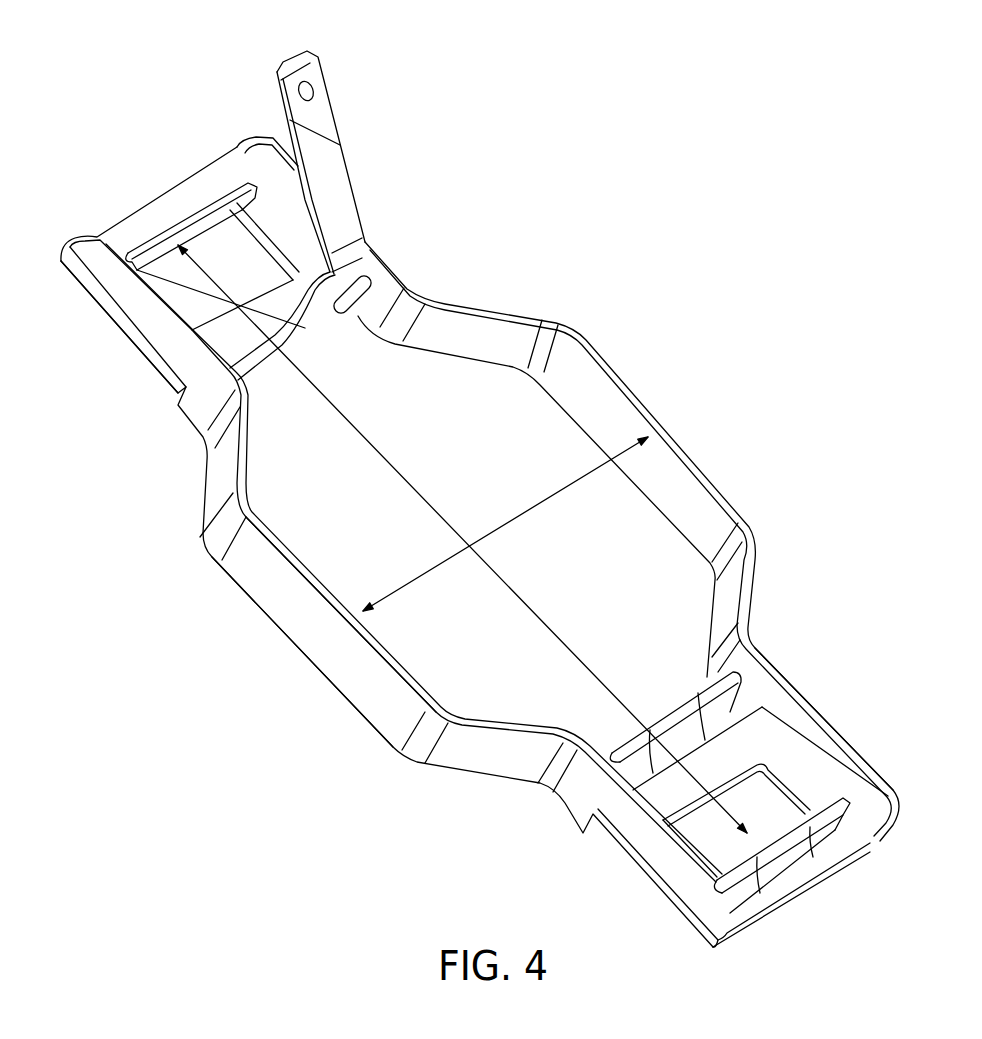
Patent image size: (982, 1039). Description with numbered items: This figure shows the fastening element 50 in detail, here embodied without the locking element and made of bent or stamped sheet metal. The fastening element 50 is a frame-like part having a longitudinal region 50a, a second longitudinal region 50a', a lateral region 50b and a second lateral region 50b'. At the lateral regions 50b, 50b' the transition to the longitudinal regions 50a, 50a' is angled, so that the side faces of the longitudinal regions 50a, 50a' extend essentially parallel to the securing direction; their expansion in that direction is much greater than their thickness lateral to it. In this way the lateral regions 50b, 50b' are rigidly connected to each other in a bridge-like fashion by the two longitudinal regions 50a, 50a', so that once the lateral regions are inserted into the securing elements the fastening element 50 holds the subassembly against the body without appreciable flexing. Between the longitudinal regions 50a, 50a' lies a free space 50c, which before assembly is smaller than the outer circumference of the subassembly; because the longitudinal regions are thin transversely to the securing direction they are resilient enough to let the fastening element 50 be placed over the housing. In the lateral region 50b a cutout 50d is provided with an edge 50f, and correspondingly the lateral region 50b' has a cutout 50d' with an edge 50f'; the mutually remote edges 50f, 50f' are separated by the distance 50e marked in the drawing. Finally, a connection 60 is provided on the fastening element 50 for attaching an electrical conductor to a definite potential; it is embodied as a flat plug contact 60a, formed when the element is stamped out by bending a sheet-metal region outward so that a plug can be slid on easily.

The fastening element 50 is at (567, 173).
The longitudinal region 50a is at (568, 489).
The longitudinal region 50a' is at (386, 591).
The lateral region 50b is at (115, 346).
The lateral region 50b' is at (824, 685).
The free space 50c is at (520, 513).
The cutout 50d is at (221, 234).
The cutout 50d' is at (676, 800).
The distance 50e is at (520, 597).
The edge 50f is at (171, 204).
The edge 50f' is at (730, 797).
The connection 60 is at (333, 82).
The flat plug contact 60a is at (333, 152).